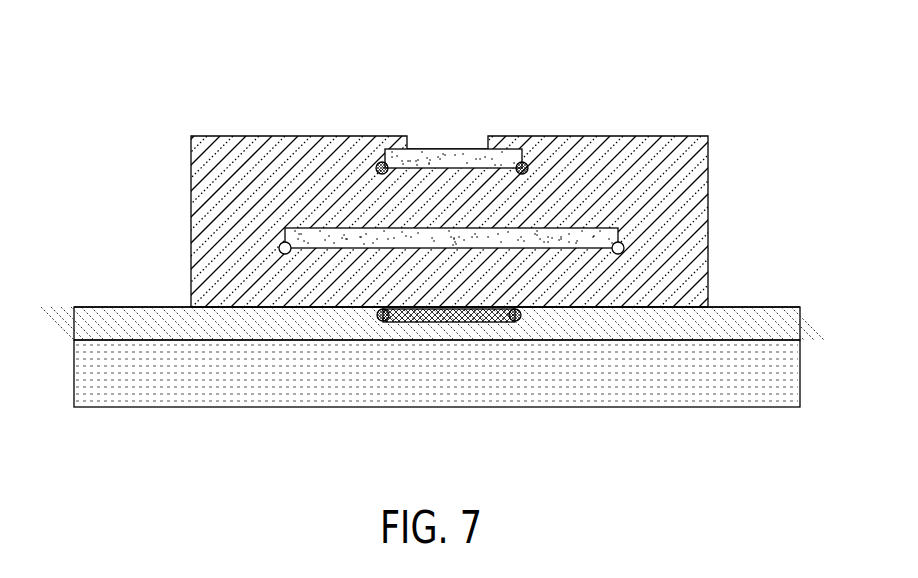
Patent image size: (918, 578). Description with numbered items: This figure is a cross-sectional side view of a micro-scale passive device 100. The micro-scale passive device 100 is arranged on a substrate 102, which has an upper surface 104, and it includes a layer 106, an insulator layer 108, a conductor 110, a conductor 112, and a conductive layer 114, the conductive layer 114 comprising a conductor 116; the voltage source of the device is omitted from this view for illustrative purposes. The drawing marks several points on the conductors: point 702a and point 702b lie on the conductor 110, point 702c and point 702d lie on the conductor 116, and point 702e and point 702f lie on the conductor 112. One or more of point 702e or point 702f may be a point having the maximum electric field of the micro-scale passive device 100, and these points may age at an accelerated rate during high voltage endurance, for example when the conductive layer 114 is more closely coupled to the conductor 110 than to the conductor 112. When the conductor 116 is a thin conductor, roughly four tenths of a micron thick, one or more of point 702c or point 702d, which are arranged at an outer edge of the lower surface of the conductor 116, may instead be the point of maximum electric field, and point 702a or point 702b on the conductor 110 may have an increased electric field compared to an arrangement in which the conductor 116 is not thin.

The micro-scale passive device 100 is at (178, 95).
The substrate 102 is at (87, 366).
The upper surface 104 is at (135, 336).
The layer 106 is at (783, 323).
The insulator layer 108 is at (600, 150).
The conductor 110 is at (455, 322).
The conductor 112 is at (460, 157).
The conductive layer 114 is at (454, 210).
The conductor 116 is at (285, 230).
The point 702a is at (384, 322).
The point 702b is at (517, 322).
The point 702c is at (280, 243).
The point 702d is at (622, 243).
The point 702e is at (381, 161).
The point 702f is at (521, 161).